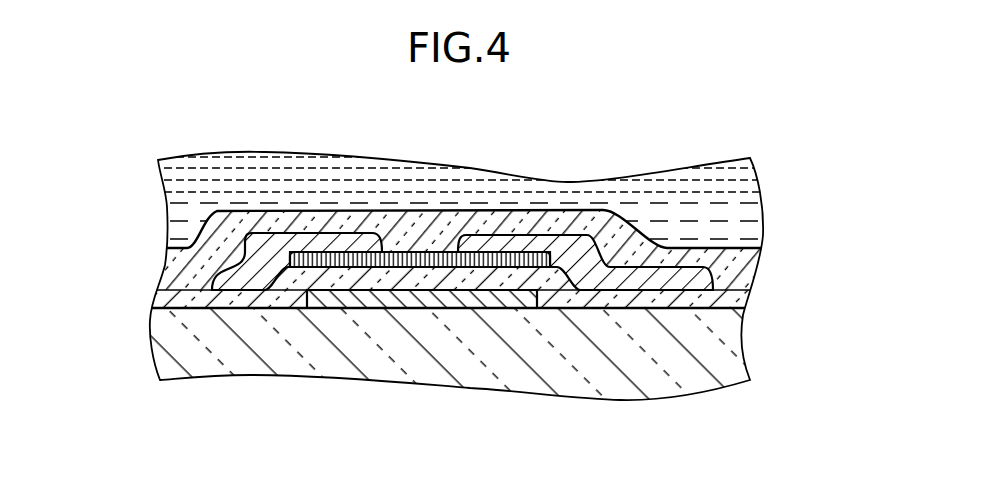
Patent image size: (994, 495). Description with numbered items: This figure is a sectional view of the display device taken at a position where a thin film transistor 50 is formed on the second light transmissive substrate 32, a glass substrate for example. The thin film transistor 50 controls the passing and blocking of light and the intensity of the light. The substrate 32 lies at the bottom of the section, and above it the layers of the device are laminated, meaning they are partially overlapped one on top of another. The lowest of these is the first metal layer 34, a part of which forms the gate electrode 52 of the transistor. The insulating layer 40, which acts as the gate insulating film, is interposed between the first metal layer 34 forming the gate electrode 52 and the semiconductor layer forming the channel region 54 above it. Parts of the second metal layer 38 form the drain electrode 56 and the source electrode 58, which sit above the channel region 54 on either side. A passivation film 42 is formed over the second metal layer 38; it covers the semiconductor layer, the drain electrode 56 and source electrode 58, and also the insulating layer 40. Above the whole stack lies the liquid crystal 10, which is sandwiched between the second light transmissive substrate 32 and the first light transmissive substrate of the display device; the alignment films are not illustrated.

The liquid crystal 10 is at (740, 198).
The second light transmissive substrate 32 is at (717, 352).
The first metal layer 34 is at (517, 310).
The second metal layer 38 is at (700, 248).
The insulating layer 40 is at (723, 300).
The passivation film 42 is at (725, 270).
The thin film transistor 50 is at (417, 310).
The gate electrode 52 is at (462, 306).
The channel region 54 is at (418, 252).
The drain electrode 56 is at (549, 246).
The source electrode 58 is at (332, 240).